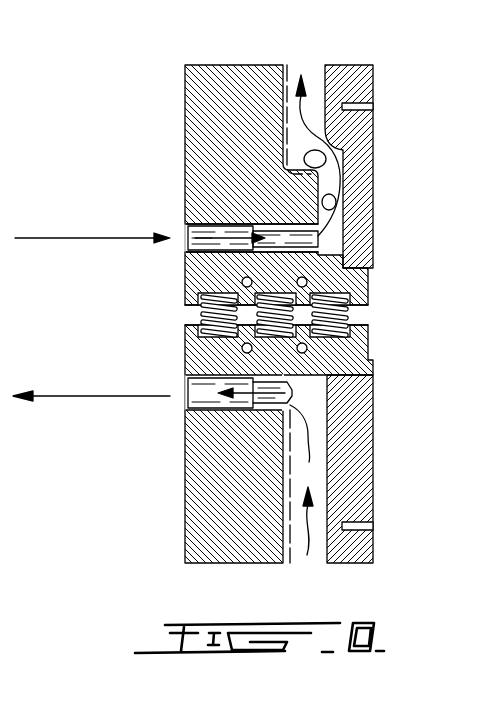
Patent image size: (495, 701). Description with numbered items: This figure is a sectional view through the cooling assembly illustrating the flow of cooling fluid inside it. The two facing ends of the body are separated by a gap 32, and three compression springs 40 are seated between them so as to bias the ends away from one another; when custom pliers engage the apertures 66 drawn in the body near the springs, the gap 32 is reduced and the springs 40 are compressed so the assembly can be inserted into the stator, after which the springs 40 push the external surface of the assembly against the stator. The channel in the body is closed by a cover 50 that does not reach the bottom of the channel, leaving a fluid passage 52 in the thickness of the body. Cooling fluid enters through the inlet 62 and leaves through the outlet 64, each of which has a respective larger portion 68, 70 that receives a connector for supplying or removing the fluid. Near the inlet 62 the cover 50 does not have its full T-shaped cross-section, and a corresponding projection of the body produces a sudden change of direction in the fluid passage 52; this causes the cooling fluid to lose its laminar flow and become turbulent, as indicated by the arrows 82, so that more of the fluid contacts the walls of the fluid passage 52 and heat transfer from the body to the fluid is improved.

The cover 50 is at (377, 143).
The fluid passage 52 is at (311, 477).
The gap 32 is at (187, 315).
The compression springs 40 is at (350, 319).
The apertures 66 is at (307, 282).
The inlet 62 is at (184, 237).
The larger portion of the inlet 68 is at (187, 247).
The larger portion of the outlet 70 is at (185, 388).
The outlet 64 is at (187, 407).
The arrows indicating turbulent flow 82 is at (337, 172).